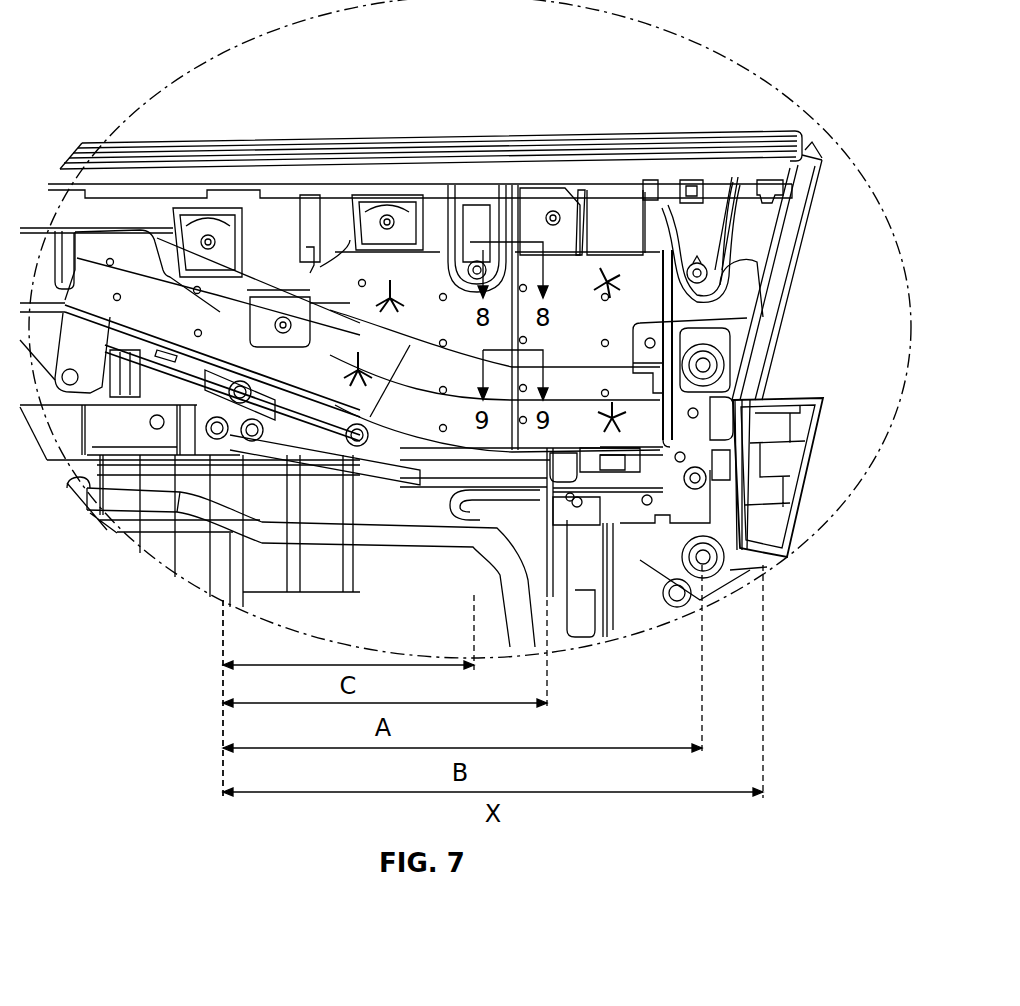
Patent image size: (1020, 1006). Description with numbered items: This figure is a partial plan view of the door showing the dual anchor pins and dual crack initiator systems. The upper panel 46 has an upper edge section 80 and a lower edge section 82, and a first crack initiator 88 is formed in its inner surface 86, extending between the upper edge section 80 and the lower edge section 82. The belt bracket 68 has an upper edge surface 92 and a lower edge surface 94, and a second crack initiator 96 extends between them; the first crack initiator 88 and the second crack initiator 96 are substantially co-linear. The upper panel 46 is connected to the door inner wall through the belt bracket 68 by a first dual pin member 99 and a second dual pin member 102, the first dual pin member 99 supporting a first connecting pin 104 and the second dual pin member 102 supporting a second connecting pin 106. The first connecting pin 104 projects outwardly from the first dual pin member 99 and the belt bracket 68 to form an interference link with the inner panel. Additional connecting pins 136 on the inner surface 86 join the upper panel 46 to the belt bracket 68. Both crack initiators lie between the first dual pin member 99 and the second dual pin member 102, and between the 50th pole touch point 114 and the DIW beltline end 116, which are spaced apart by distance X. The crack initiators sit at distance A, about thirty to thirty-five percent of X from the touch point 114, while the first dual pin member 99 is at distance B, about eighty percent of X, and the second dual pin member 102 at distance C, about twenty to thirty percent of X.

The upper panel 46 is at (826, 150).
The belt bracket 68 is at (765, 244).
The upper edge section 80 is at (743, 128).
The lower edge section 82 is at (440, 485).
The inner surface 86 is at (148, 300).
The first crack initiator 88 is at (537, 340).
The upper edge surface 92 is at (684, 131).
The lower edge surface 94 is at (300, 195).
The second crack initiator 96 is at (532, 250).
The first dual pin member 99 is at (745, 222).
The second dual pin member 102 is at (437, 277).
The first connecting pin 104 is at (708, 275).
The second connecting pin 106 is at (478, 260).
The 50th pole touch point 114 is at (222, 618).
The DIW beltline end 116 is at (812, 140).
The additional connecting pins 136 is at (206, 234).